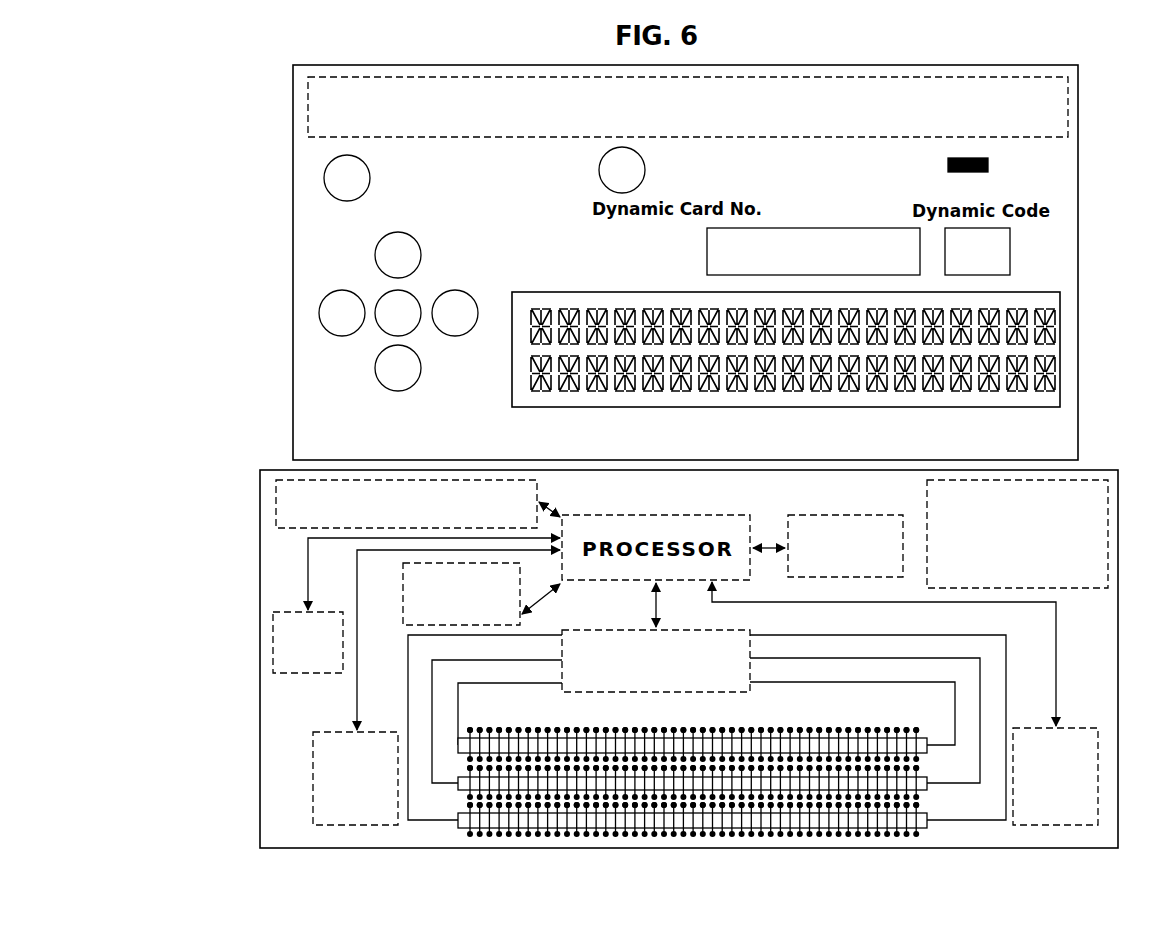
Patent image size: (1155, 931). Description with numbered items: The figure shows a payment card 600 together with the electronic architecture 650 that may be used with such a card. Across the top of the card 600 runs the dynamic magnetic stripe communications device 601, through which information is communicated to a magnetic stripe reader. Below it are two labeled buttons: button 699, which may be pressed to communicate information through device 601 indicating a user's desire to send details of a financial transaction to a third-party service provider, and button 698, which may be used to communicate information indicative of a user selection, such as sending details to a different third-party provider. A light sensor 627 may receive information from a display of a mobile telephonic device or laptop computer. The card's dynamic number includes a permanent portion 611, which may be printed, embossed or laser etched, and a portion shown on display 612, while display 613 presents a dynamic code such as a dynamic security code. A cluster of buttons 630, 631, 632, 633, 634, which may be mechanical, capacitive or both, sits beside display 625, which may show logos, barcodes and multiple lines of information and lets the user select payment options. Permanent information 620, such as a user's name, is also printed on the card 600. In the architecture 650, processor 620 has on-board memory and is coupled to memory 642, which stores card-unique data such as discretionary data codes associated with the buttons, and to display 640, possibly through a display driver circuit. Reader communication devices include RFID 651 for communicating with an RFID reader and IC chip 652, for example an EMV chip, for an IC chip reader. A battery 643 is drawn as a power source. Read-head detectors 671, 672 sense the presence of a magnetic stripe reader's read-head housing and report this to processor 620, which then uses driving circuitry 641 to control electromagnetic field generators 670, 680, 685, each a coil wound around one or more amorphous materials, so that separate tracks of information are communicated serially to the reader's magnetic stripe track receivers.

The card 600 is at (293, 262).
The dynamic magnetic stripe communications device 601 is at (309, 133).
The button 699 is at (359, 159).
The button 698 is at (608, 152).
The light sensor 627 is at (988, 163).
The permanent portion 611 is at (643, 260).
The display 612 is at (763, 276).
The display 613 is at (978, 276).
The button 633 is at (405, 234).
The button 631 is at (345, 290).
The button 630 is at (393, 292).
The button 632 is at (492, 282).
The button 634 is at (377, 364).
The display 625 is at (1058, 404).
The permanent information / processor 620 is at (346, 429).
The architecture 650 is at (261, 656).
The memory 642 is at (276, 492).
The display 640 is at (805, 515).
The RFID 651 is at (406, 590).
The IC chip 652 is at (306, 610).
The driving circuitry 641 is at (602, 630).
The battery 643 is at (1106, 582).
The read-head detector 671 is at (350, 731).
The read-head detector 672 is at (1012, 812).
The electromagnetic field generator 670 is at (582, 728).
The electromagnetic field generator 680 is at (466, 779).
The electromagnetic field generator 685 is at (466, 816).